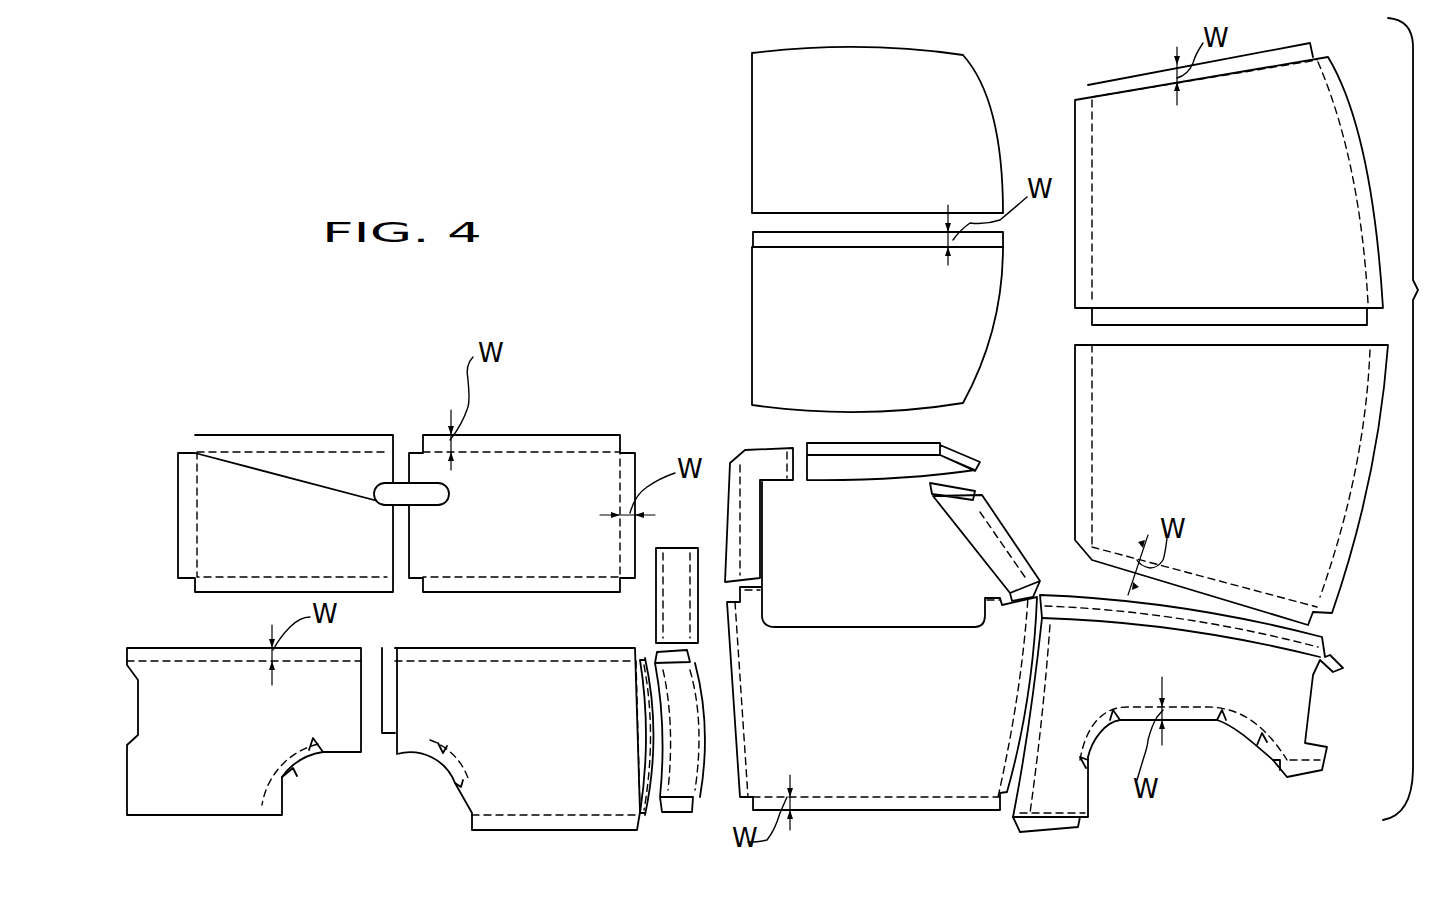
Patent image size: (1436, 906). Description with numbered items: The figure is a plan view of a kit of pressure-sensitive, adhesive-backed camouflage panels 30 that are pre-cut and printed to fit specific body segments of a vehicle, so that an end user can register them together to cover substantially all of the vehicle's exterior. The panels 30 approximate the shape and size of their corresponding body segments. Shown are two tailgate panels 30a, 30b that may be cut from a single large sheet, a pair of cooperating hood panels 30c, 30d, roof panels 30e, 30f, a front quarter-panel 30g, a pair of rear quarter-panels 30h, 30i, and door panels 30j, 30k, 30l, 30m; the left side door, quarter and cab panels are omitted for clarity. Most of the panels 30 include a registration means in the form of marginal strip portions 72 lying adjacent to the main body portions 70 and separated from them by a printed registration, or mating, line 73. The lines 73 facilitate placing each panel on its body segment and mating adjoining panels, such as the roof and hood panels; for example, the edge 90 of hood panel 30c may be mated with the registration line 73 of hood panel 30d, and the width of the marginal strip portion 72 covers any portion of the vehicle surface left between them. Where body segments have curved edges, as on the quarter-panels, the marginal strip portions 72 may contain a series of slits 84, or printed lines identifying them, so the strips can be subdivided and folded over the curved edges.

The panels 30 is at (1409, 419).
The tailgate panel 30a is at (534, 530).
The tailgate panel 30b is at (283, 530).
The hood panel 30c is at (1230, 478).
The hood panel 30d is at (1233, 216).
The roof panel 30e is at (872, 341).
The roof panel 30f is at (878, 163).
The front quarter-panel 30g is at (1123, 679).
The rear quarter-panel 30h is at (220, 735).
The rear quarter-panel 30i is at (510, 732).
The door panel 30j is at (880, 731).
The door panel 30k is at (758, 535).
The door panel 30l is at (881, 460).
The door panel 30m is at (985, 538).
The main body portion 70 is at (300, 475).
The marginal strip portion 72 is at (238, 442).
The registration line 73 is at (1347, 167).
The slits 84 is at (287, 772).
The edge 90 is at (1315, 347).